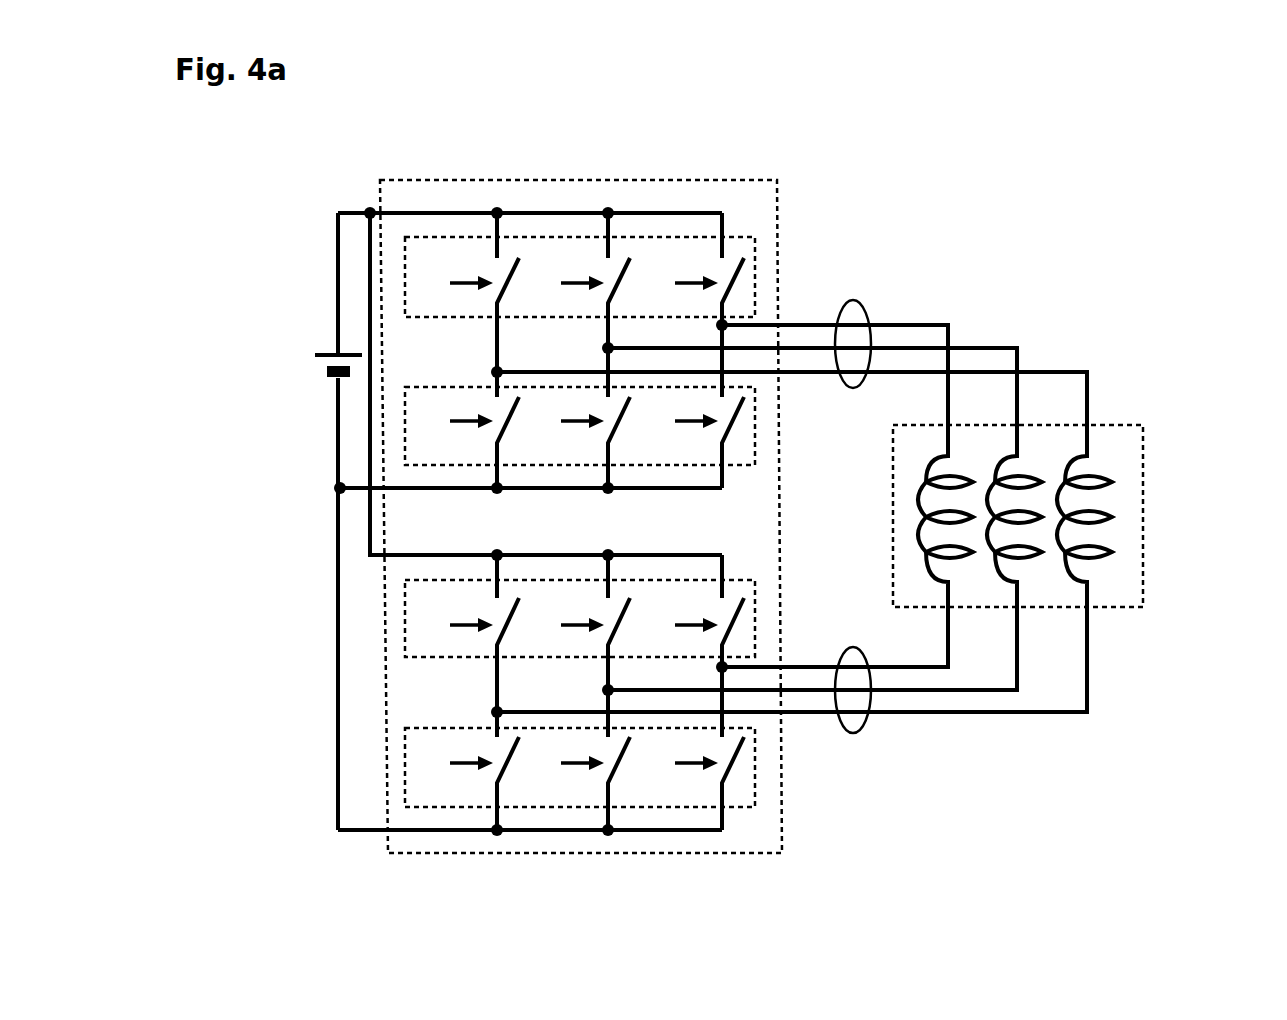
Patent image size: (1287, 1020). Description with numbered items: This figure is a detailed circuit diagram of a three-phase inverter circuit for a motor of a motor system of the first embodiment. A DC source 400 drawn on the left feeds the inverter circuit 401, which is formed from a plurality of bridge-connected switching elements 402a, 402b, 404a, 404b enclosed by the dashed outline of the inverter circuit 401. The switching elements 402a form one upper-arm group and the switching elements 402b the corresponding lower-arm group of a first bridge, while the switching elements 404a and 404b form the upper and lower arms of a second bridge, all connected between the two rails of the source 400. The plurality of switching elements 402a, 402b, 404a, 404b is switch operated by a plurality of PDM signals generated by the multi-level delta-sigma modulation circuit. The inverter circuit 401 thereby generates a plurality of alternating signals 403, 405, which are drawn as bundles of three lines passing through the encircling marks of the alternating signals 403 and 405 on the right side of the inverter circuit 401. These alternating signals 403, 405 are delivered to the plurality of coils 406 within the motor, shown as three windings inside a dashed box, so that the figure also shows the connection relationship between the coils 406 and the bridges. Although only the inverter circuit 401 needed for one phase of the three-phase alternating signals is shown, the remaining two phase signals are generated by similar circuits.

The DC power source (battery) 400 is at (321, 342).
The inverter circuit 401 is at (681, 173).
The switching elements 402a is at (768, 264).
The switching elements 402b is at (770, 430).
The alternating signal 403 is at (869, 294).
The switching elements 404a is at (773, 604).
The switching elements 404b is at (771, 774).
The alternating signal 405 is at (862, 743).
The coils 406 is at (1153, 420).